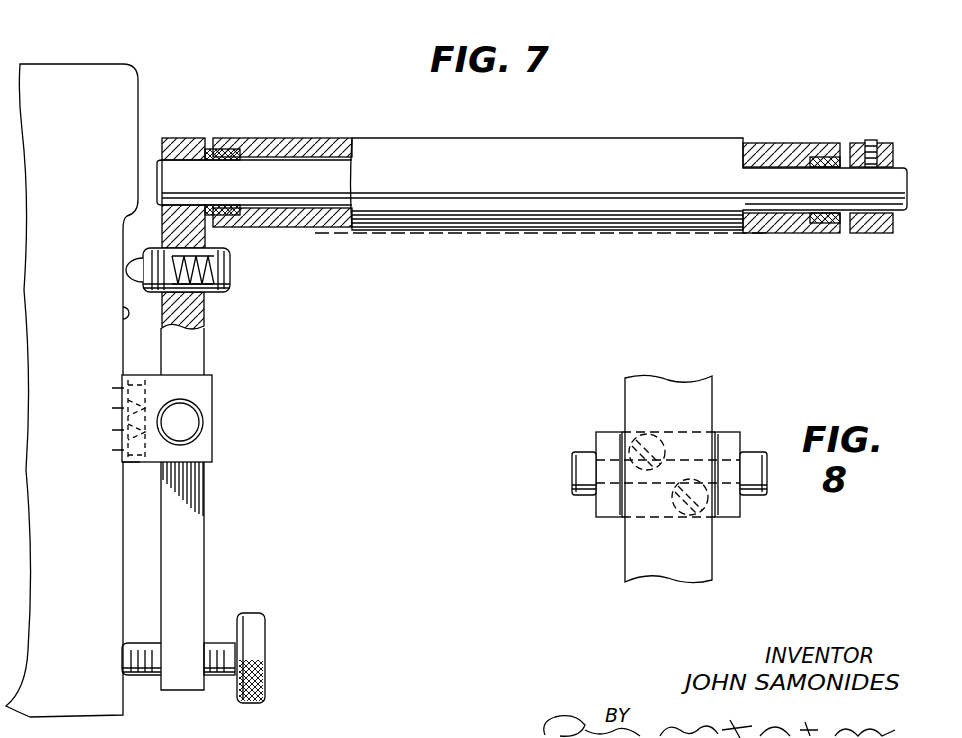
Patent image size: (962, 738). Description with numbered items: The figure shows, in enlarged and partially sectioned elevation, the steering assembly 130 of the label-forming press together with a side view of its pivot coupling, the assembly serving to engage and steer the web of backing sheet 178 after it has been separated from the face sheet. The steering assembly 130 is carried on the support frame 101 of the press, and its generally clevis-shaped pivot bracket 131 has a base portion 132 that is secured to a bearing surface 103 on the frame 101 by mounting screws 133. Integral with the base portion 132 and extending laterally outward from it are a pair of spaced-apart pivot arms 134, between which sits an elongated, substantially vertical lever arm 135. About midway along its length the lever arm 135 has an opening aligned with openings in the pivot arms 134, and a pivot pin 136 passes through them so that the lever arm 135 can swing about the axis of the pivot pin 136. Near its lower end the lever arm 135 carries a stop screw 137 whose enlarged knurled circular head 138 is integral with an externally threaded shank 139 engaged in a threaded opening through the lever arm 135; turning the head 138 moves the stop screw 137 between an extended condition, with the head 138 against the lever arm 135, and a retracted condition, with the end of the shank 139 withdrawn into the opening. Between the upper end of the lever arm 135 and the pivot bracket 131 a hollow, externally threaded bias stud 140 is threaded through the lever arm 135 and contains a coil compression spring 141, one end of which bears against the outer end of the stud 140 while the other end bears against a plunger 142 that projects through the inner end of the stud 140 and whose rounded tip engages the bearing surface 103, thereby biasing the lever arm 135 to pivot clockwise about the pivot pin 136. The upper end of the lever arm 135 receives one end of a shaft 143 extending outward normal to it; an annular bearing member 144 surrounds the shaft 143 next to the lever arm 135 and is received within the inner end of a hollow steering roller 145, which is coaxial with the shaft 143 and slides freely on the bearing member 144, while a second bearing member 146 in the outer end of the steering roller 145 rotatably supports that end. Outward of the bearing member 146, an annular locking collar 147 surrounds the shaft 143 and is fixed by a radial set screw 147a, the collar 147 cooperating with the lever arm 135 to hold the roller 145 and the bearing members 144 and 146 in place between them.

In FIG. 7, the support frame 101 is at (65, 62).
In FIG. 7, the bearing surface 103 is at (128, 312).
In FIG. 7, the steering assembly 130 is at (327, 61).
In FIG. 7, the pivot bracket 131 is at (218, 391).
In FIG. 8, the pivot bracket 131 is at (593, 426).
In FIG. 7, the base portion 132 is at (132, 467).
In FIG. 8, the base portion 132 is at (683, 430).
In FIG. 7, the mounting screws 133 is at (134, 374).
In FIG. 8, the mounting screws 133 is at (675, 488).
In FIG. 7, the pivot arms 134 is at (188, 463).
In FIG. 8, the pivot arms 134 is at (735, 432).
In FIG. 7, the lever arm 135 is at (190, 567).
In FIG. 8, the lever arm 135 is at (652, 377).
In FIG. 7, the pivot pin 136 is at (190, 425).
In FIG. 8, the pivot pin 136 is at (573, 483).
In FIG. 7, the stop screw 137 is at (268, 617).
In FIG. 7, the circular head 138 is at (265, 672).
In FIG. 7, the threaded shank 139 is at (143, 676).
In FIG. 7, the bias stud 140 is at (230, 288).
In FIG. 7, the coil compression spring 141 is at (210, 270).
In FIG. 7, the plunger 142 is at (137, 258).
In FIG. 7, the shaft 143 is at (318, 140).
In FIG. 7, the bearing member 144 is at (232, 150).
In FIG. 7, the steering roller 145 is at (590, 152).
In FIG. 7, the bearing member 146 is at (843, 143).
In FIG. 7, the locking collar 147 is at (882, 233).
In FIG. 7, the set screw 147a is at (877, 140).
In FIG. 7, the backing sheet 178 is at (513, 234).